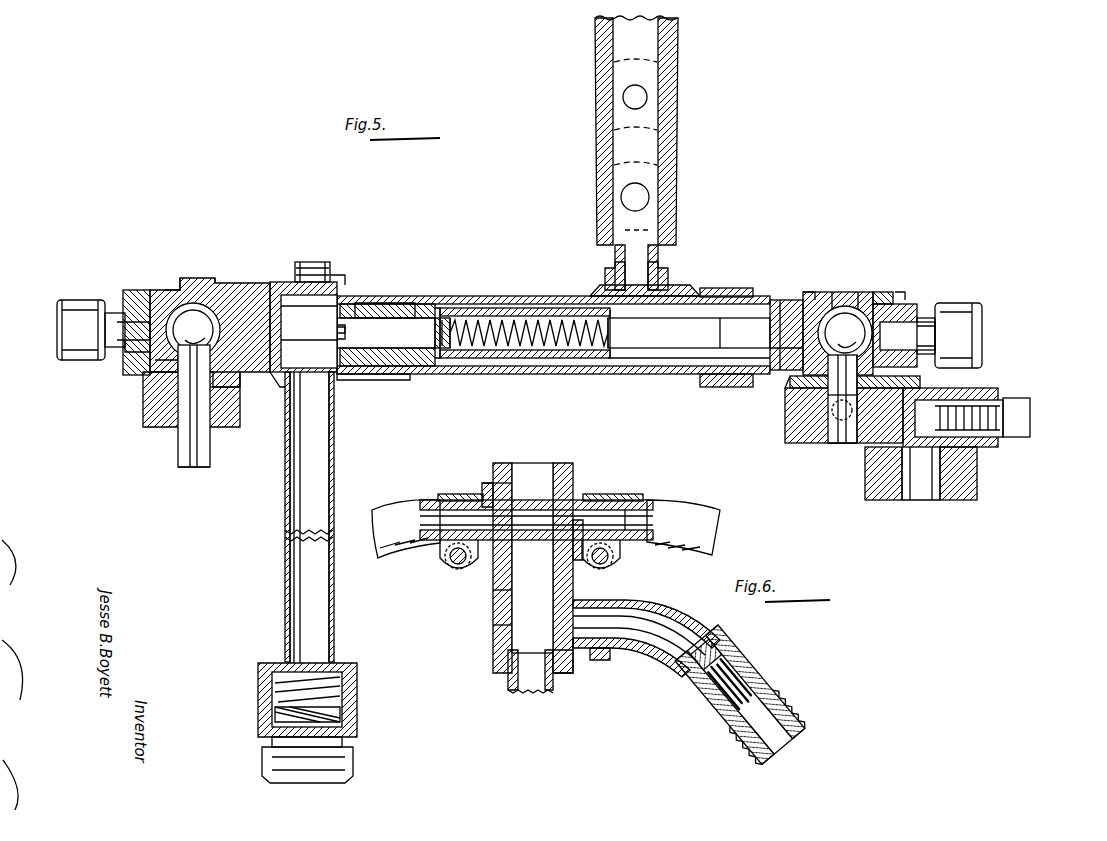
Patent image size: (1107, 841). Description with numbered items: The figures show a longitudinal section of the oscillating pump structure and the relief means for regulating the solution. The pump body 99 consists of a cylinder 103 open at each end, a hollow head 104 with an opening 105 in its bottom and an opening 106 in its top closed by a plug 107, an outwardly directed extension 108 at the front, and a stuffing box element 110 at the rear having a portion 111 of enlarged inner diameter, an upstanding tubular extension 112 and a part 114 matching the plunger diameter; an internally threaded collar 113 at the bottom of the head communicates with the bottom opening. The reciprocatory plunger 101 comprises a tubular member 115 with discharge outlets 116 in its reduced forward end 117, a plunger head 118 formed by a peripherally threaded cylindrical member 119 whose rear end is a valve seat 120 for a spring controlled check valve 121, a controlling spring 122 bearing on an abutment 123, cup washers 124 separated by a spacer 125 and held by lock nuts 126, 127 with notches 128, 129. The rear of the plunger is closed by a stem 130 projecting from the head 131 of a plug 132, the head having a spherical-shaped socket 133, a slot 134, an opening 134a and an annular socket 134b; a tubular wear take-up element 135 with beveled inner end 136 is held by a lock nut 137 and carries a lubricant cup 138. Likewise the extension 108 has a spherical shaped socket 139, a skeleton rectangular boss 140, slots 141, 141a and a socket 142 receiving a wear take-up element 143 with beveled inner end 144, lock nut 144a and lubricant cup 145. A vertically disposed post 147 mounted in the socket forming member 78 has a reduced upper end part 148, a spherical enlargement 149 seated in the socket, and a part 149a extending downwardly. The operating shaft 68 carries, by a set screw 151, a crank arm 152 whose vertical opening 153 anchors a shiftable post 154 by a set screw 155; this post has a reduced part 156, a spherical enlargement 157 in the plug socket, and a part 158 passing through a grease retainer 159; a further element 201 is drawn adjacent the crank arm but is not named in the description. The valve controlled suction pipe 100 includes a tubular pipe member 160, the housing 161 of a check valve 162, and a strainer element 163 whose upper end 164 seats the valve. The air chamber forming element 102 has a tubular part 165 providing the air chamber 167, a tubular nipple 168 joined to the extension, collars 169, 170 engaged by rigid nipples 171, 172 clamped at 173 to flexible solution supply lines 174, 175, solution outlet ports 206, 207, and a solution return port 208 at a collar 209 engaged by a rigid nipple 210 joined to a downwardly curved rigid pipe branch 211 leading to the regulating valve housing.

In FIG. 5, the operating shaft 68 is at (915, 480).
In FIG. 5, the socket forming member 78 is at (225, 410).
In FIG. 5, the pump body 99 is at (517, 285).
In FIG. 5, the valve controlled suction pipe 100 is at (345, 448).
In FIG. 5, the reciprocatory plunger 101 is at (568, 375).
In FIG. 5, the air chamber forming element 102 is at (676, 149).
In FIG. 6, the air chamber forming element 102 is at (485, 591).
In FIG. 5, the cylinder 103 is at (460, 306).
In FIG. 5, the hollow head 104 is at (280, 282).
In FIG. 5, the opening 105 is at (280, 387).
In FIG. 5, the opening 106 is at (340, 284).
In FIG. 5, the plug 107 is at (332, 262).
In FIG. 5, the outwardly directed extension 108 is at (240, 298).
In FIG. 5, the stuffing box element 110 is at (665, 290).
In FIG. 5, the portion of enlarged inner diameter 111 is at (700, 383).
In FIG. 5, the upstanding tubular extension 112 is at (665, 272).
In FIG. 5, the internally threaded collar 113 is at (345, 382).
In FIG. 5, the part of stuffing box element 114 is at (666, 349).
In FIG. 5, the tubular member 115 is at (770, 300).
In FIG. 5, the discharge outlets 116 is at (452, 318).
In FIG. 5, the reduced forward end 117 is at (428, 306).
In FIG. 5, the plunger head 118 is at (386, 333).
In FIG. 5, the peripherally threaded cylindrical member 119 is at (359, 335).
In FIG. 5, the valve seat 120 is at (440, 350).
In FIG. 5, the spring controlled check valve 121 is at (448, 350).
In FIG. 5, the controlling spring 122 is at (530, 318).
In FIG. 5, the abutment 123 is at (745, 310).
In FIG. 5, the cup washers 124 is at (365, 304).
In FIG. 5, the spacer 125 is at (383, 302).
In FIG. 5, the lock nut 126 is at (398, 382).
In FIG. 5, the lock nut 127 is at (337, 352).
In FIG. 5, the notches 128 is at (337, 329).
In FIG. 5, the notches 129 is at (337, 308).
In FIG. 5, the stem 130 is at (785, 300).
In FIG. 5, the head 131 is at (803, 300).
In FIG. 5, the plug 132 is at (895, 276).
In FIG. 5, the spherical-shaped socket 133 is at (805, 358).
In FIG. 5, the slot 134 is at (873, 289).
In FIG. 5, the opening 134a is at (790, 378).
In FIG. 5, the annular socket 134b is at (871, 380).
In FIG. 5, the tubular wear take-up element 135 is at (928, 318).
In FIG. 5, the beveled inner end 136 is at (905, 292).
In FIG. 5, the lock nut 137 is at (905, 302).
In FIG. 5, the lubricant cup 138 is at (982, 330).
In FIG. 5, the spherical shaped socket 139 is at (180, 334).
In FIG. 5, the skeleton rectangular boss 140 is at (175, 288).
In FIG. 5, the slot 141 is at (215, 290).
In FIG. 5, the slot 141a is at (225, 375).
In FIG. 5, the socket 142 is at (135, 292).
In FIG. 5, the tubular wear take-up element 143 is at (110, 342).
In FIG. 5, the beveled inner end 144 is at (112, 312).
In FIG. 5, the lock nut 144a is at (130, 356).
In FIG. 5, the lubricant cup 145 is at (75, 320).
In FIG. 5, the vertically disposed post 147 is at (189, 431).
In FIG. 5, the reduced upper end part 148 is at (193, 285).
In FIG. 5, the spherical enlargement 149 is at (135, 372).
In FIG. 5, the part of post 149a is at (188, 455).
In FIG. 5, the set screw 151 is at (1030, 410).
In FIG. 5, the crank arm 152 is at (790, 432).
In FIG. 5, the vertical opening 153 is at (840, 450).
In FIG. 5, the shiftable post 154 is at (855, 446).
In FIG. 5, the set screw 155 is at (830, 440).
In FIG. 5, the reduced part 156 is at (848, 305).
In FIG. 5, the spherical enlargement 157 is at (830, 300).
In FIG. 5, the part of post 158 is at (832, 408).
In FIG. 5, the grease retainer 159 is at (828, 388).
In FIG. 5, the tubular pipe member 160 is at (285, 567).
In FIG. 5, the housing 161 is at (258, 680).
In FIG. 5, the check valve 162 is at (345, 692).
In FIG. 5, the strainer element 163 is at (353, 762).
In FIG. 5, the upper end of strainer 164 is at (272, 742).
In FIG. 5, the tubular part 165 is at (660, 190).
In FIG. 6, the tubular part 165 is at (493, 628).
In FIG. 5, the air chamber 167 is at (645, 145).
In FIG. 5, the tubular nipple 168 is at (658, 255).
In FIG. 6, the tubular nipple 168 is at (508, 688).
In FIG. 6, the collar 169 is at (490, 483).
In FIG. 6, the collar 170 is at (580, 500).
In FIG. 6, the rigid nipple 171 is at (445, 542).
In FIG. 6, the rigid nipple 172 is at (630, 505).
In FIG. 6, the clamp 173 is at (445, 494).
In FIG. 6, the flexible solution supply line 174 is at (392, 505).
In FIG. 6, the flexible solution supply line 175 is at (700, 520).
In FIG. 5, the cylinder 201 is at (977, 475).
In FIG. 6, the solution outlet port 206 is at (510, 595).
In FIG. 6, the solution outlet port 207 is at (493, 600).
In FIG. 6, the solution return port 208 is at (565, 673).
In FIG. 6, the internally threaded collar 209 is at (590, 598).
In FIG. 6, the rigid nipple 210 is at (590, 655).
In FIG. 6, the downwardly curved rigid pipe branch 211 is at (660, 650).